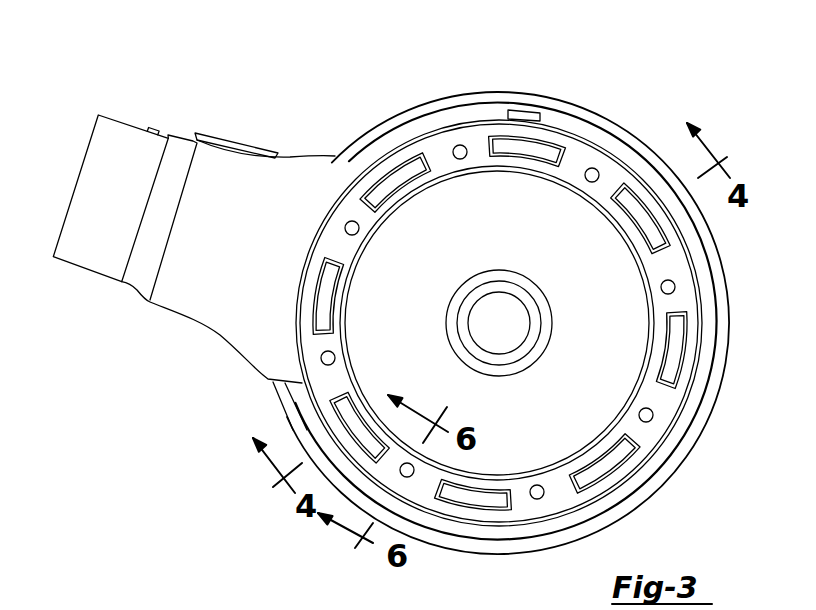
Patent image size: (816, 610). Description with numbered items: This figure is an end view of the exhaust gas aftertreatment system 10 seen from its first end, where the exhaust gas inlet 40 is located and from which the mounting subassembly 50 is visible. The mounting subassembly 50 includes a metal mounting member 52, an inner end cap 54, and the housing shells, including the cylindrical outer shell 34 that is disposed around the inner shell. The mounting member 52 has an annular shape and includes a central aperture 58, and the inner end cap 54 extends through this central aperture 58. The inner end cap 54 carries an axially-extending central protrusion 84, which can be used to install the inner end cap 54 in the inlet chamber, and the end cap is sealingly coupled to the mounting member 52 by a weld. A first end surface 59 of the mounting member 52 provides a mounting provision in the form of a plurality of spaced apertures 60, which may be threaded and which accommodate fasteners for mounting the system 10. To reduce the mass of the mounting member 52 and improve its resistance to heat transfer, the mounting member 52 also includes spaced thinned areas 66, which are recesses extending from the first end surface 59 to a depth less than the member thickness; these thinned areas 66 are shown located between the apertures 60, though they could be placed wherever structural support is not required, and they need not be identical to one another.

The system 10 is at (688, 84).
The exhaust gas inlet 40 is at (80, 172).
The mounting subassembly 50 is at (686, 416).
The mounting member 52 is at (485, 210).
The inner end cap 54 is at (620, 322).
The central aperture 58 is at (480, 142).
The first end surface 59 is at (573, 163).
The apertures 60 is at (455, 152).
The thinned areas 66 is at (520, 143).
The central protrusion 84 is at (493, 320).
The outer shell 34 is at (331, 601).